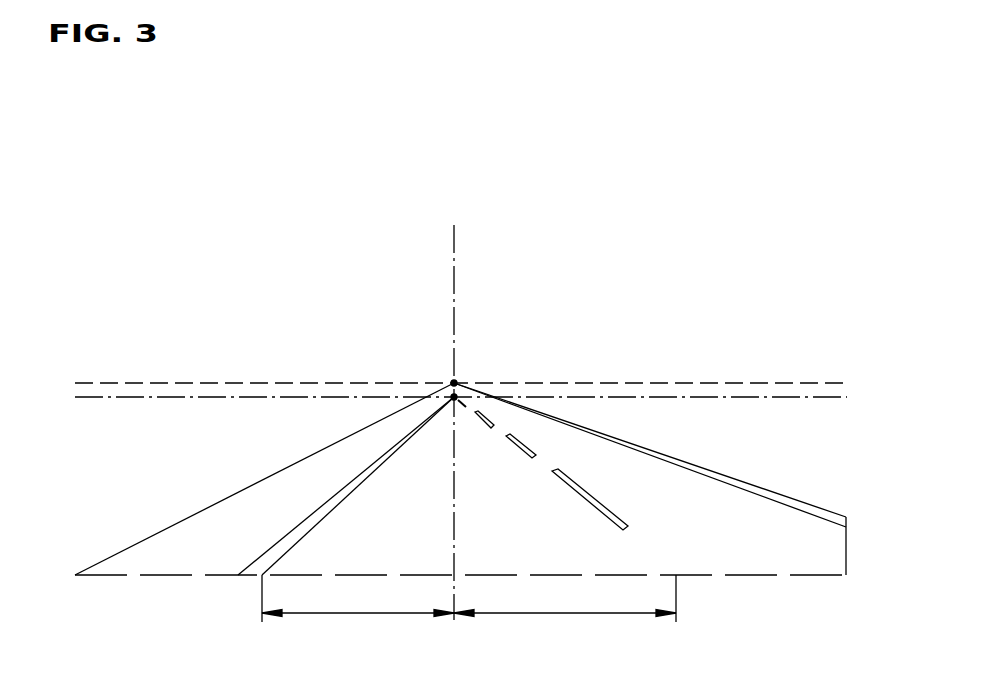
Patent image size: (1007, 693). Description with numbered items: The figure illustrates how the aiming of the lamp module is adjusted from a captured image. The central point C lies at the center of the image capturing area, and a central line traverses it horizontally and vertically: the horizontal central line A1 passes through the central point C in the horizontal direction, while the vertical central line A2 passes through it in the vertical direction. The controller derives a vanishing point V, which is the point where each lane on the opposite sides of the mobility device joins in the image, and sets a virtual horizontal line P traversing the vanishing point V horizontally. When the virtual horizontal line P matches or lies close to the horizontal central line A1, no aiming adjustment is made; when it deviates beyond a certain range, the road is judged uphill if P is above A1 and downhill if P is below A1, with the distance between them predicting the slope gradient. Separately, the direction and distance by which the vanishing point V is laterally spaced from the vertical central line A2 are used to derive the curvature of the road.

The vertical central line A2 is at (453, 242).
The horizontal central line A1 is at (763, 383).
The virtual horizontal line P is at (797, 397).
The central point C is at (452, 381).
The vanishing point V is at (456, 396).
The element lane is at (287, 542).